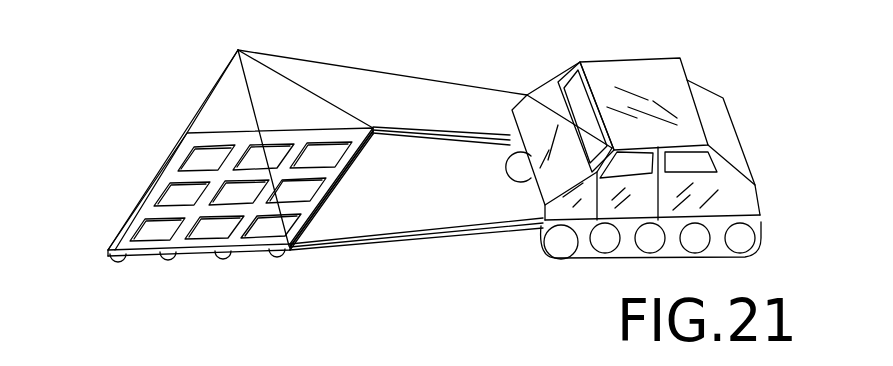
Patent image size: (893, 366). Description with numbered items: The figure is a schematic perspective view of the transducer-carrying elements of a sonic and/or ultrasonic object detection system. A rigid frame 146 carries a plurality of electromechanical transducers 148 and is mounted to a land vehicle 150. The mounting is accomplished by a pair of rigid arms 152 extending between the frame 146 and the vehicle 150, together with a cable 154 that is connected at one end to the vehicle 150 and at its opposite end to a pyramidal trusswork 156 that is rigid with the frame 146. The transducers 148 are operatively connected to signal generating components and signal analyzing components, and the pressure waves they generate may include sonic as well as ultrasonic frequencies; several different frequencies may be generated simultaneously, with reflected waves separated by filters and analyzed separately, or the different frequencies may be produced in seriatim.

The rigid frame 146 is at (197, 173).
The electromechanical transducers 148 is at (217, 262).
The land vehicle 150 is at (720, 120).
The rigid arms 152 is at (452, 138).
The cable 154 is at (383, 71).
The pyramidal trusswork 156 is at (217, 88).